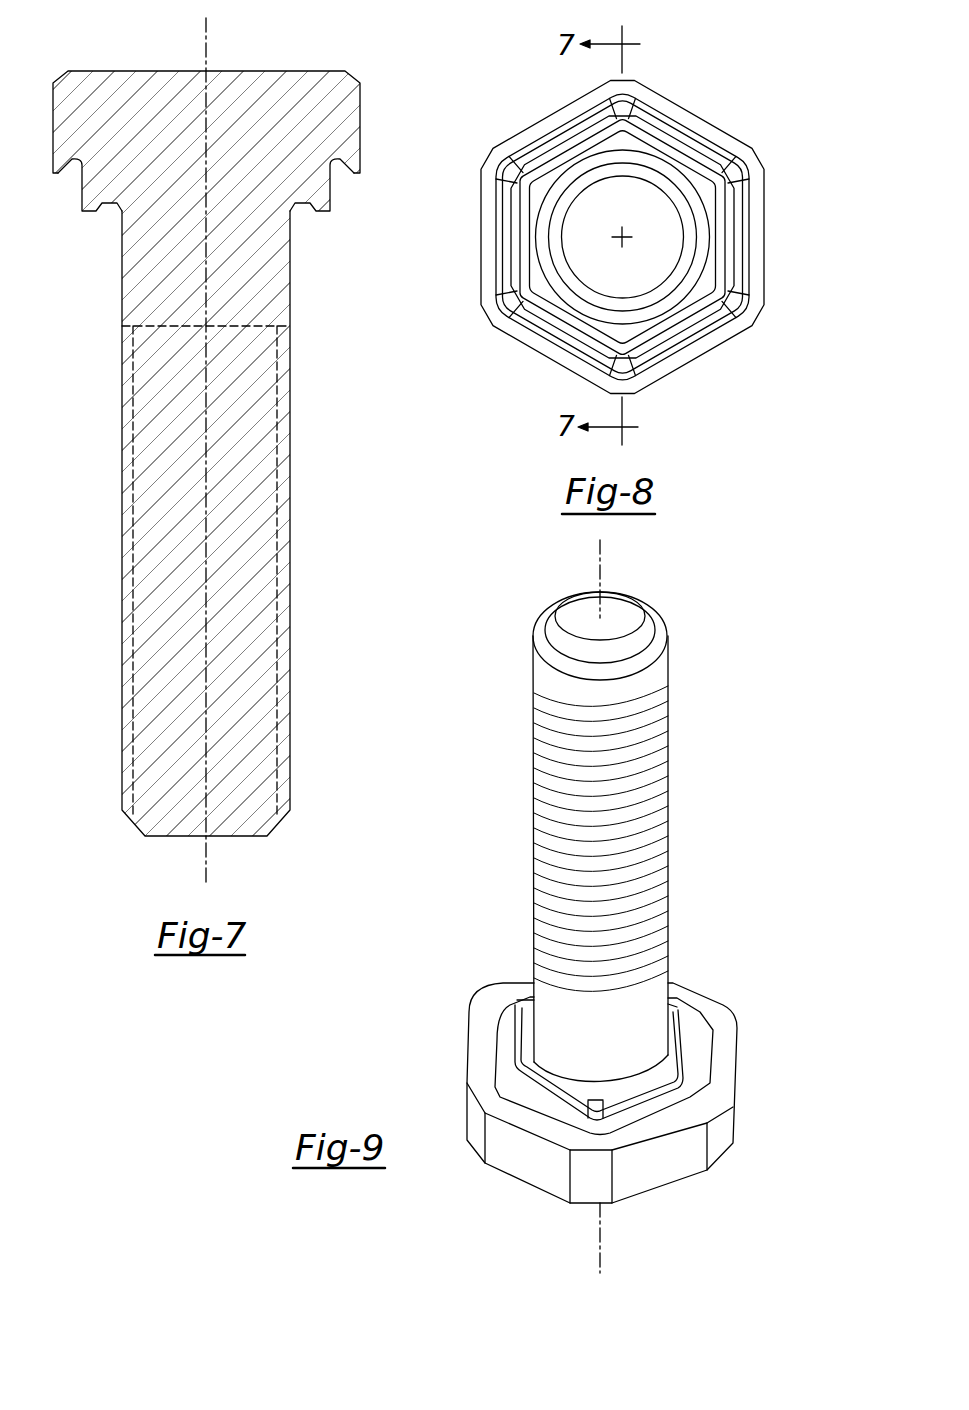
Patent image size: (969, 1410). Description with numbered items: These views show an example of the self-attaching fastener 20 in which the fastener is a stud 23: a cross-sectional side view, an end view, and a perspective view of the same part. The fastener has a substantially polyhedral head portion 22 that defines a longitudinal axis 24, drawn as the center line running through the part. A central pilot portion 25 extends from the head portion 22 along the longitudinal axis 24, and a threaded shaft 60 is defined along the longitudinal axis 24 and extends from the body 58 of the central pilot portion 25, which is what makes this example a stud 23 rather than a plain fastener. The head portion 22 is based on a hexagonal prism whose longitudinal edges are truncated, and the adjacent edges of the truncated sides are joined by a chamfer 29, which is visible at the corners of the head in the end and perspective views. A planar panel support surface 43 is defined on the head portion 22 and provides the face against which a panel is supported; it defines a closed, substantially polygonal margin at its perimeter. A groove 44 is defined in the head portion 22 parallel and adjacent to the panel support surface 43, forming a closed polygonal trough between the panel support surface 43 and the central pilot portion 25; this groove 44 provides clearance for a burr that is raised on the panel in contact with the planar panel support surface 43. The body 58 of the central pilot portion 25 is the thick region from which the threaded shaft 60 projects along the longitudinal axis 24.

In FIG. 7, the self-attaching fastener 20 is at (150, 50).
In FIG. 7, the stud 23 is at (206, 454).
In FIG. 7, the head portion 22 is at (360, 125).
In FIG. 8, the head portion 22 is at (765, 183).
In FIG. 9, the head portion 22 is at (733, 1120).
In FIG. 7, the longitudinal axis 24 is at (206, 42).
In FIG. 8, the longitudinal axis 24 is at (624, 234).
In FIG. 9, the longitudinal axis 24 is at (600, 562).
In FIG. 7, the central pilot portion 25 is at (317, 195).
In FIG. 8, the central pilot portion 25 is at (735, 262).
In FIG. 9, the central pilot portion 25 is at (690, 1063).
In FIG. 9, the chamfer 29 is at (713, 1143).
In FIG. 8, the planar panel support surface 43 is at (760, 290).
In FIG. 9, the planar panel support surface 43 is at (715, 1095).
In FIG. 8, the groove 44 is at (735, 172).
In FIG. 9, the groove 44 is at (700, 1043).
In FIG. 7, the body of the central pilot portion 58 is at (197, 190).
In FIG. 7, the threaded shaft 60 is at (289, 510).
In FIG. 8, the threaded shaft 60 is at (700, 238).
In FIG. 9, the threaded shaft 60 is at (669, 843).